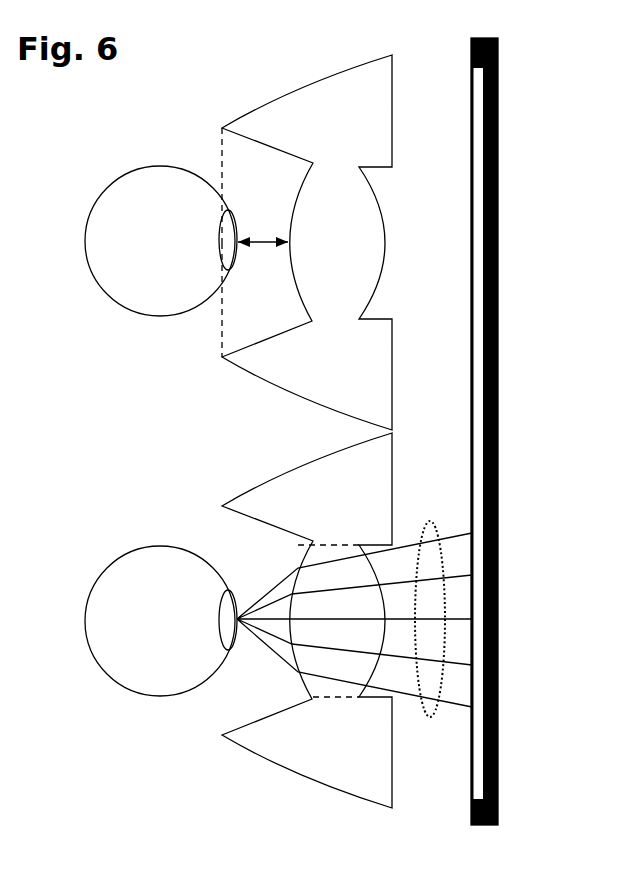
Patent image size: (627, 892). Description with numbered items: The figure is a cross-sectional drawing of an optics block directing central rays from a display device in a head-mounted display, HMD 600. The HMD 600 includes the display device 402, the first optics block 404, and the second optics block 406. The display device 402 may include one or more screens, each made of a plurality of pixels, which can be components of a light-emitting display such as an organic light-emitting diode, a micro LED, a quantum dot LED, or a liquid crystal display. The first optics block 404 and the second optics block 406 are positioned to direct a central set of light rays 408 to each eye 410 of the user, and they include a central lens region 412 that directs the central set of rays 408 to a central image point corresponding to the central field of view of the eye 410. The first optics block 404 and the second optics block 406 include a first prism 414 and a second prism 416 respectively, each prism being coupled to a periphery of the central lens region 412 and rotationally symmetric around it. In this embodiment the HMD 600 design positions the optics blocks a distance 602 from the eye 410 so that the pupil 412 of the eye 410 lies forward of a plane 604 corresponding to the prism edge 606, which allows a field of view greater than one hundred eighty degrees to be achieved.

The HMD 600 is at (517, 148).
The display device 402 is at (497, 727).
The first optics block 404 is at (253, 100).
The second optics block 406 is at (248, 480).
The central set of light rays 408 is at (440, 557).
The eye 410 is at (152, 210).
The central lens region 412 is at (223, 240).
The first prism 414 is at (363, 110).
The second prism 416 is at (368, 480).
The distance 602 is at (266, 246).
The plane 604 is at (222, 333).
The prism edge 606 is at (222, 128).